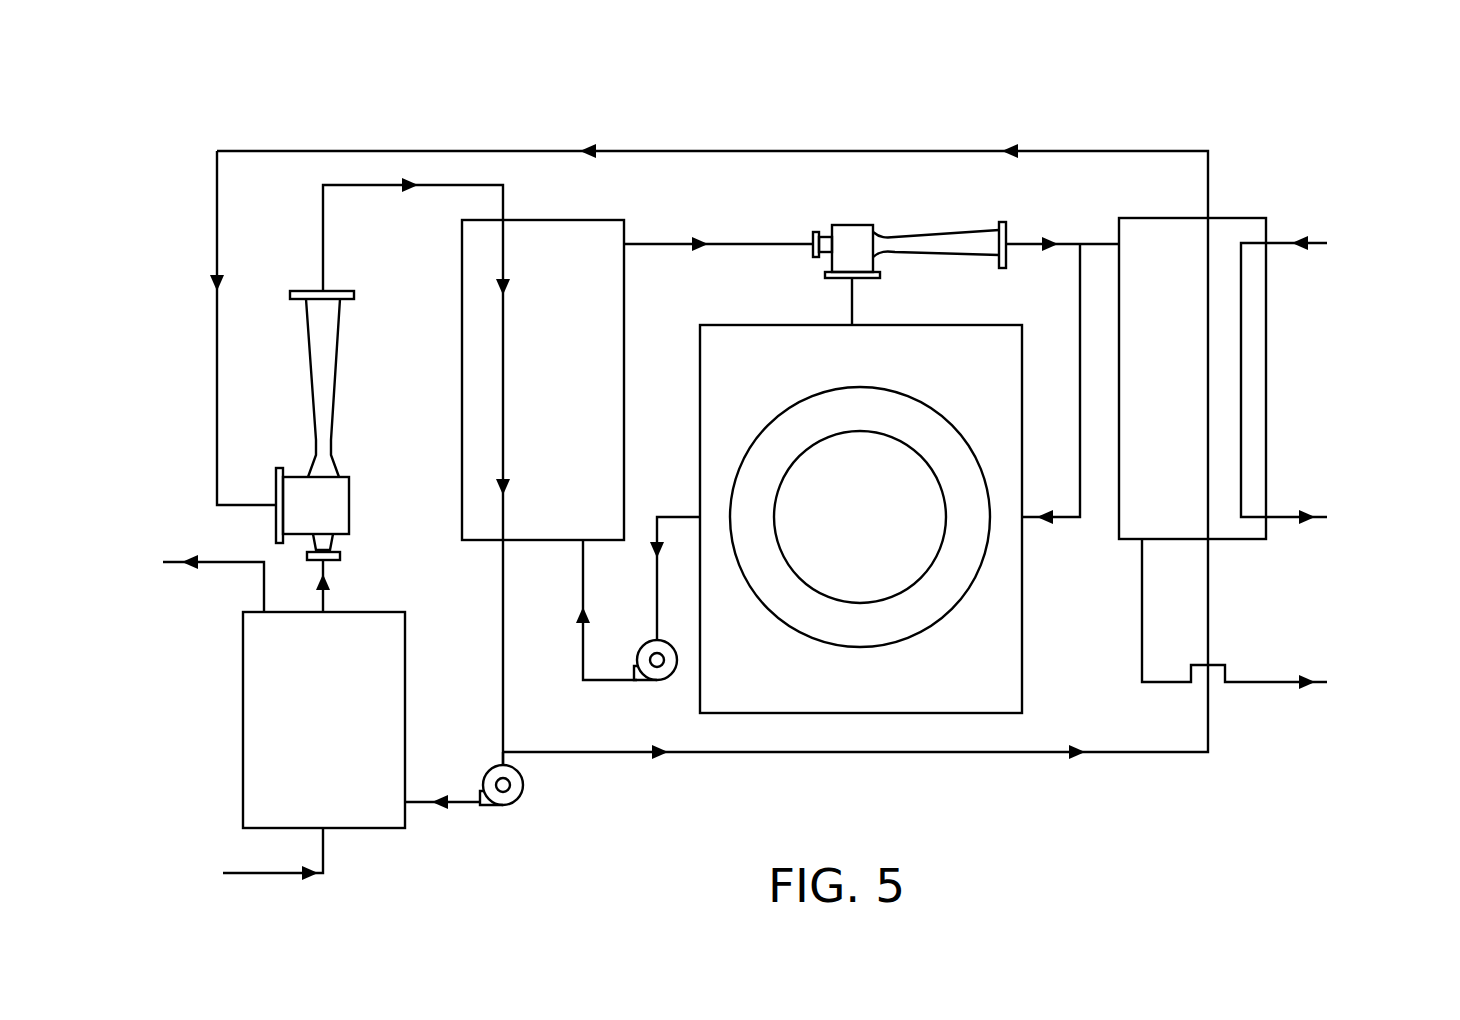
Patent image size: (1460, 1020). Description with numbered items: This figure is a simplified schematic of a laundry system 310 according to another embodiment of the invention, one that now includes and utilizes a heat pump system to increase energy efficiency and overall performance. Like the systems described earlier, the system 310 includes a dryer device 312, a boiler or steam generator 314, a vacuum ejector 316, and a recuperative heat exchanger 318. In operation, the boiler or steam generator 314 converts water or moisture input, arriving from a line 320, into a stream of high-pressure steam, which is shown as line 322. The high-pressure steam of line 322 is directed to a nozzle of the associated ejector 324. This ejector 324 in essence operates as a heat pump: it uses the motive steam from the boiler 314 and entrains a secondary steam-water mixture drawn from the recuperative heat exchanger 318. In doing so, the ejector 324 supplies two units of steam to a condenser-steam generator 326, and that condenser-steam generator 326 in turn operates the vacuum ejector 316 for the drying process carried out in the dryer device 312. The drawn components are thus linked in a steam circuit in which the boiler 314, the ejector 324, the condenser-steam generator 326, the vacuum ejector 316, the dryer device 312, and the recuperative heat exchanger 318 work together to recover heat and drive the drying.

The laundry system 310 is at (1198, 86).
The dryer device 312 is at (1022, 688).
The boiler or steam generator 314 is at (243, 710).
The vacuum ejector 316 is at (980, 234).
The recuperative heat exchanger 318 is at (1235, 218).
The line 320 is at (457, 806).
The line 322 is at (327, 598).
The ejector 324 is at (338, 340).
The condenser-steam generator 326 is at (540, 219).